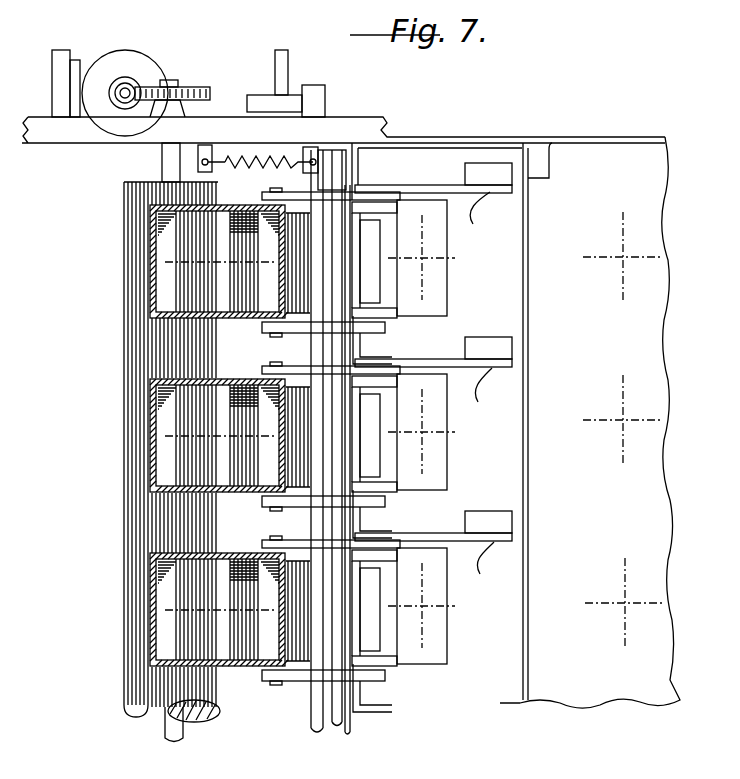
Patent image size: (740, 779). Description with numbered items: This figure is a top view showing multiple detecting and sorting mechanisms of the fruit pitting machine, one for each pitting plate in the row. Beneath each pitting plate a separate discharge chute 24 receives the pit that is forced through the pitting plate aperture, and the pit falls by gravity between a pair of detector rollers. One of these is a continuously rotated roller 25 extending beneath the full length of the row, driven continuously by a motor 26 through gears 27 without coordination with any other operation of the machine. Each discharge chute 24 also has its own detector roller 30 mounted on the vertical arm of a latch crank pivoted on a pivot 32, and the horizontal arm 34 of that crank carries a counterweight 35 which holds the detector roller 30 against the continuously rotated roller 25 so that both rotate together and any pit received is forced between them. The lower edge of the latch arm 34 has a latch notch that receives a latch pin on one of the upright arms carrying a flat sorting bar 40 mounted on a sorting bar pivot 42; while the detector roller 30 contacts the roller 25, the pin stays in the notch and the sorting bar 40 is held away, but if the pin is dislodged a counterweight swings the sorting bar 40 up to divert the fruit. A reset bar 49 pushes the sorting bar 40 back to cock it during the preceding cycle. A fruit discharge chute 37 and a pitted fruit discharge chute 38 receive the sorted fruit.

The discharge chute 24 is at (153, 262).
The continuously rotated roller 25 is at (142, 528).
The motor 26 is at (147, 68).
The gears 27 is at (212, 92).
The detector roller 30 is at (246, 318).
The pivot 32 is at (333, 702).
The horizontal arm 34 is at (440, 180).
The counterweight 35 is at (493, 386).
The fruit discharge chute 37 is at (362, 337).
The pitted fruit discharge chute 38 is at (549, 180).
The sorting bar 40 is at (443, 304).
The sorting bar pivot 42 is at (345, 732).
The reset bar 49 is at (316, 102).